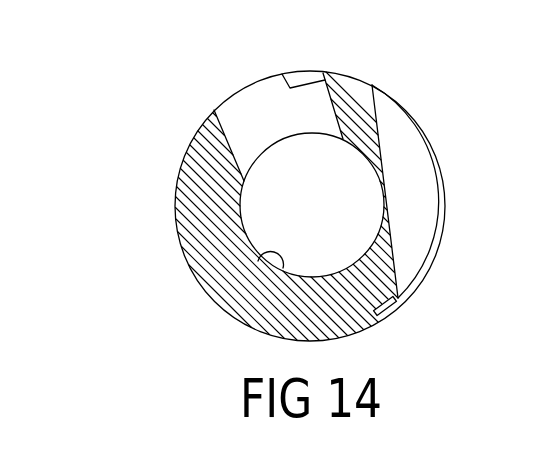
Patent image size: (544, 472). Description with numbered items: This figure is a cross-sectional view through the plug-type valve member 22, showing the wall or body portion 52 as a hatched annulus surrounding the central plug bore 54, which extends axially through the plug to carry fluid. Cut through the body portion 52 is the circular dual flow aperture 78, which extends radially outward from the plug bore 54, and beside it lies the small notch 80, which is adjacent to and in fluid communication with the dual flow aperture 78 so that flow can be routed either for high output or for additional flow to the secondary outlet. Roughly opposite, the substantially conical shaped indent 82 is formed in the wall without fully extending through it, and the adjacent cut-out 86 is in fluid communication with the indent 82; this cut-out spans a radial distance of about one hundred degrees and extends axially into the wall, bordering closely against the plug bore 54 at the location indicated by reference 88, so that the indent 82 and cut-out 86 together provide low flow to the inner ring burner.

The valve member 22 is at (172, 118).
The body portion 52 is at (201, 176).
The plug bore 54 is at (258, 264).
The dual flow aperture 78 is at (225, 129).
The notch 80 is at (298, 74).
The conical shaped indent 82 is at (394, 304).
The cut-out 86 is at (392, 121).
The border of cut-out against the bore 88 is at (395, 189).